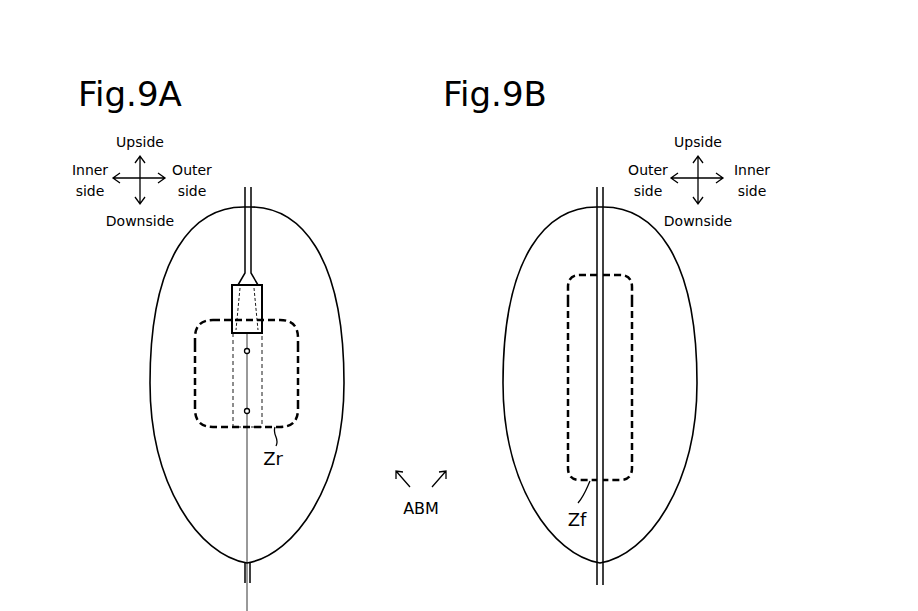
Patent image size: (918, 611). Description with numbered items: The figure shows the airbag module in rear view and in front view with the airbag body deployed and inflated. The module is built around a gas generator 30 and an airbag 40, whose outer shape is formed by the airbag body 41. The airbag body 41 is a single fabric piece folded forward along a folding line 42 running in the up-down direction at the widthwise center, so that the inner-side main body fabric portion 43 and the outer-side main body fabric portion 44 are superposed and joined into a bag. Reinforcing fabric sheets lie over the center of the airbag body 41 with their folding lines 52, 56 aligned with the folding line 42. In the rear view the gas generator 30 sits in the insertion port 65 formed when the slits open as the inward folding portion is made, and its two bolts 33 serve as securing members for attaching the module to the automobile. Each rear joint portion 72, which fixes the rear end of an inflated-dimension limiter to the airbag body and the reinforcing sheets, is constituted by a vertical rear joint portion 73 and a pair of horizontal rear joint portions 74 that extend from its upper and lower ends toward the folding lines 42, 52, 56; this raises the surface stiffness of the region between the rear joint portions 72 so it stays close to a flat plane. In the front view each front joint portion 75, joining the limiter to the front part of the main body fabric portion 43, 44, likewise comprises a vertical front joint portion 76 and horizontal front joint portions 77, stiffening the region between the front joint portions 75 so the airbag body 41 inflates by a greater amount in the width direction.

In FIG. 9A, the gas generator 30 is at (258, 285).
In FIG. 9A, the bolts 33 is at (251, 351).
In FIG. 9A, the airbag 40 is at (274, 360).
In FIG. 9B, the airbag 40 is at (573, 371).
In FIG. 9A, the airbag body 41 is at (253, 360).
In FIG. 9B, the airbag body 41 is at (591, 371).
In FIG. 9A, the folding line 42 is at (322, 578).
In FIG. 9A, the main body fabric portion 43 is at (226, 208).
In FIG. 9B, the main body fabric portion 43 is at (622, 208).
In FIG. 9A, the main body fabric portion 44 is at (306, 237).
In FIG. 9B, the main body fabric portion 44 is at (538, 237).
In FIG. 9A, the folding line 52 is at (322, 578).
In FIG. 9A, the folding line 56 is at (252, 590).
In FIG. 9A, the insertion port 65 is at (240, 327).
In FIG. 9A, the rear joint portion 72 is at (248, 374).
In FIG. 9A, the vertical rear joint portion 73 is at (195, 376).
In FIG. 9A, the horizontal rear joint portions 74 is at (214, 320).
In FIG. 9B, the front joint portion 75 is at (600, 377).
In FIG. 9B, the vertical front joint portion 76 is at (568, 378).
In FIG. 9B, the horizontal front joint portions 77 is at (592, 276).